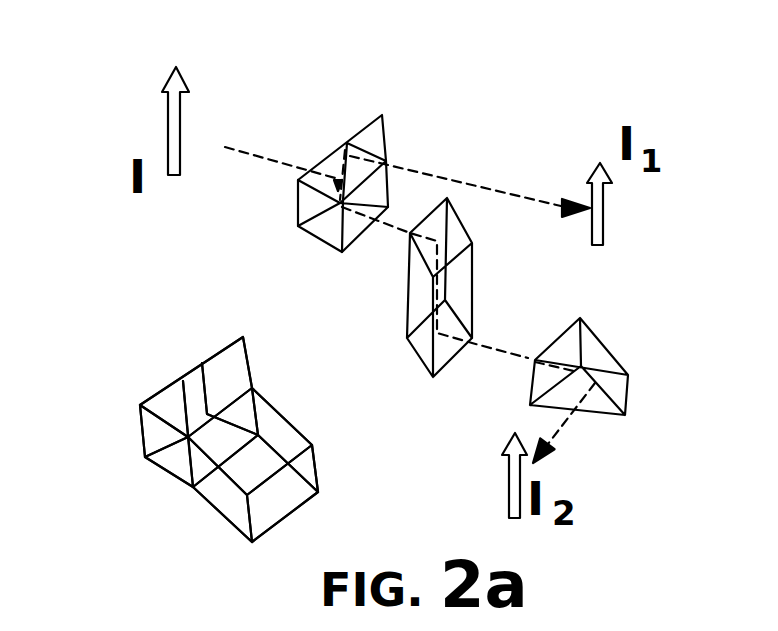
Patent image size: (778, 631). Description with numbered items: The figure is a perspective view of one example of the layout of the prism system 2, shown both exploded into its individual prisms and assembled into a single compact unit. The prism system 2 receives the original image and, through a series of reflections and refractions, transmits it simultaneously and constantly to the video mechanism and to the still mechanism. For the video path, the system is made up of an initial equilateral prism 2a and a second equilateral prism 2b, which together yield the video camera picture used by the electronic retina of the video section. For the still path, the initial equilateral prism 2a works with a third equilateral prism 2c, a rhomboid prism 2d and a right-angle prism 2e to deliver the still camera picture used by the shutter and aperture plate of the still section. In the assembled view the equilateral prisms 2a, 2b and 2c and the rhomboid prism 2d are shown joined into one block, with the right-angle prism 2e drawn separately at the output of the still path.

The prism system 2 is at (173, 505).
The initial equilateral prism 2a is at (307, 202).
The second equilateral prism 2b is at (380, 147).
The third equilateral prism 2c is at (327, 232).
The rhomboid prism 2d is at (460, 305).
The right-angle prism 2e is at (595, 358).